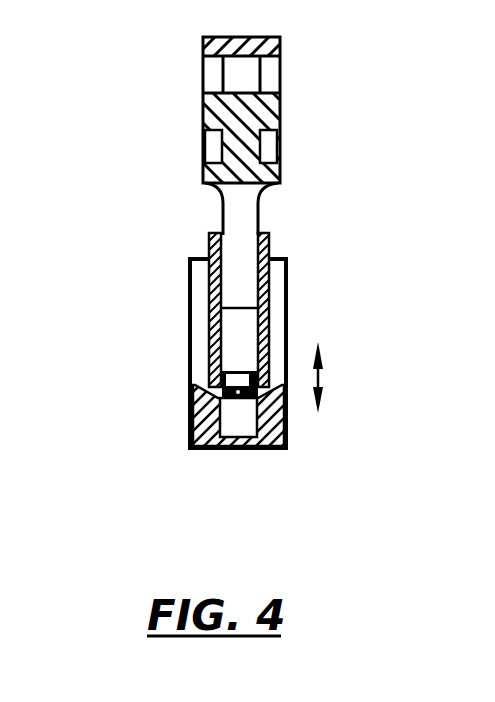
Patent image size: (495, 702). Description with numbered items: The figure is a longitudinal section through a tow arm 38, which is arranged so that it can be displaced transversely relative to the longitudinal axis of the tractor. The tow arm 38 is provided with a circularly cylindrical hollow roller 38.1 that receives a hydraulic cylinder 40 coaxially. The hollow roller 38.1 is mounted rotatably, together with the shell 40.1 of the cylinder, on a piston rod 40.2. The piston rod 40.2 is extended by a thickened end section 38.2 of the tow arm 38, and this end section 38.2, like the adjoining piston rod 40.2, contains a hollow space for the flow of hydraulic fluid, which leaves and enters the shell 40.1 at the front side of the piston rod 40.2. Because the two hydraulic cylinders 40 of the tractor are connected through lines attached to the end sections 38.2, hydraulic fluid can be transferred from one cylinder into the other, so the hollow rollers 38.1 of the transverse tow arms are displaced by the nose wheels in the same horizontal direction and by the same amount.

The tow arm 38 is at (308, 218).
The hollow roller 38.1 is at (287, 323).
The end section 38.2 is at (279, 103).
The hydraulic cylinder 40 is at (208, 333).
The shell 40.1 is at (272, 407).
The piston rod 40.2 is at (228, 273).